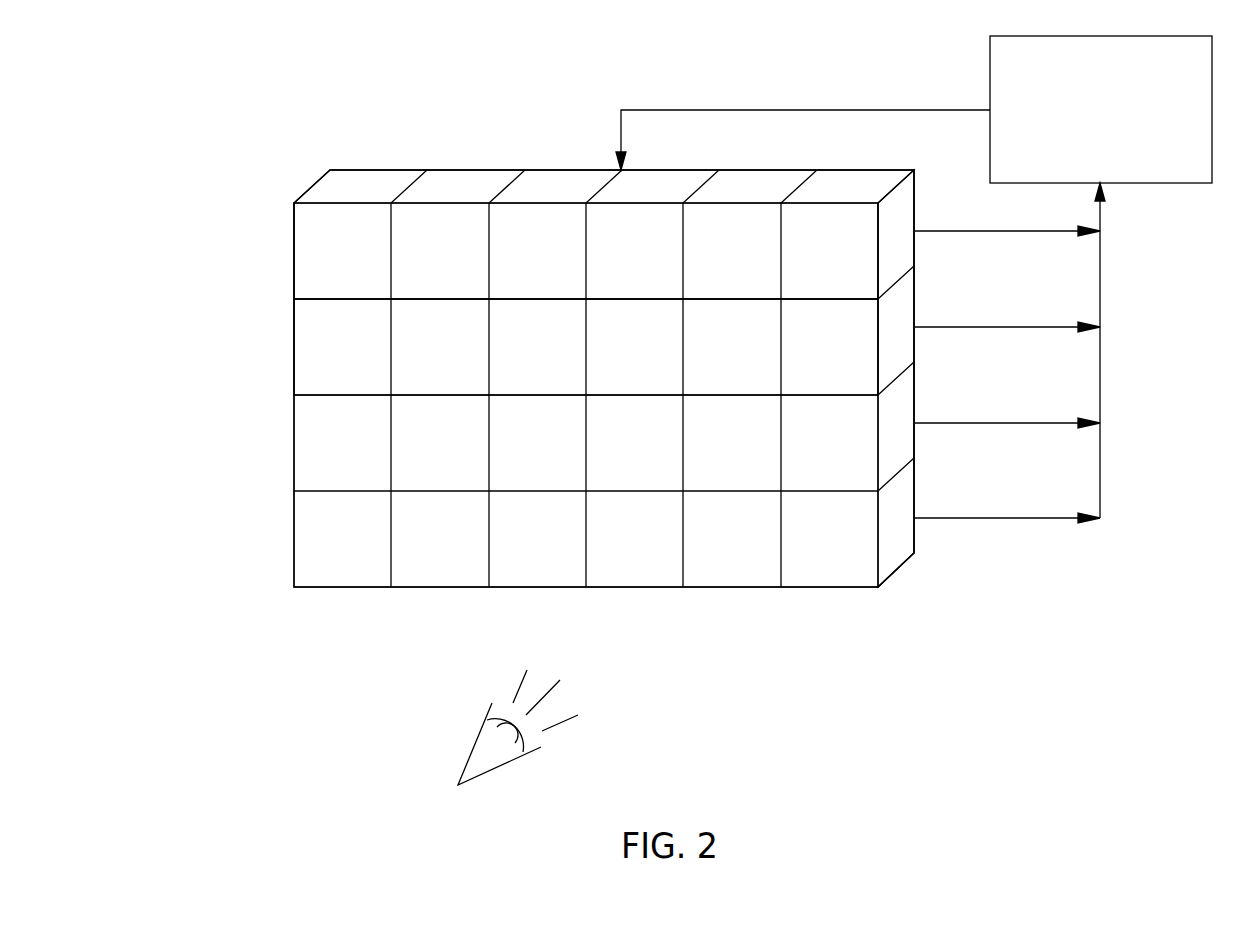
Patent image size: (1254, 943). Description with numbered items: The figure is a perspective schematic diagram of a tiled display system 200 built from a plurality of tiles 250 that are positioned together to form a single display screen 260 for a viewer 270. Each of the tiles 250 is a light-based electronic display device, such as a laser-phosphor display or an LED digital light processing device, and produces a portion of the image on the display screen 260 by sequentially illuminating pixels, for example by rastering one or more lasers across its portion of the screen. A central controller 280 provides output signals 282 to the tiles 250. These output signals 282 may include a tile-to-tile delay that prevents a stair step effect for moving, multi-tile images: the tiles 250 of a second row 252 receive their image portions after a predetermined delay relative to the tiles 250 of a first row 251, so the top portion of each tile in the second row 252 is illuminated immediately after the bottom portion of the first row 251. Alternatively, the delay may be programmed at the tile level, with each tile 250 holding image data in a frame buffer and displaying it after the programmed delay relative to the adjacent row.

The tiled display system 200 is at (428, 118).
The tile 250 is at (294, 251).
The first row 251 is at (277, 230).
The second row 252 is at (276, 323).
The display screen 260 is at (917, 573).
The viewer 270 is at (474, 745).
The central controller 280 is at (1081, 79).
The output signals 282 is at (884, 108).